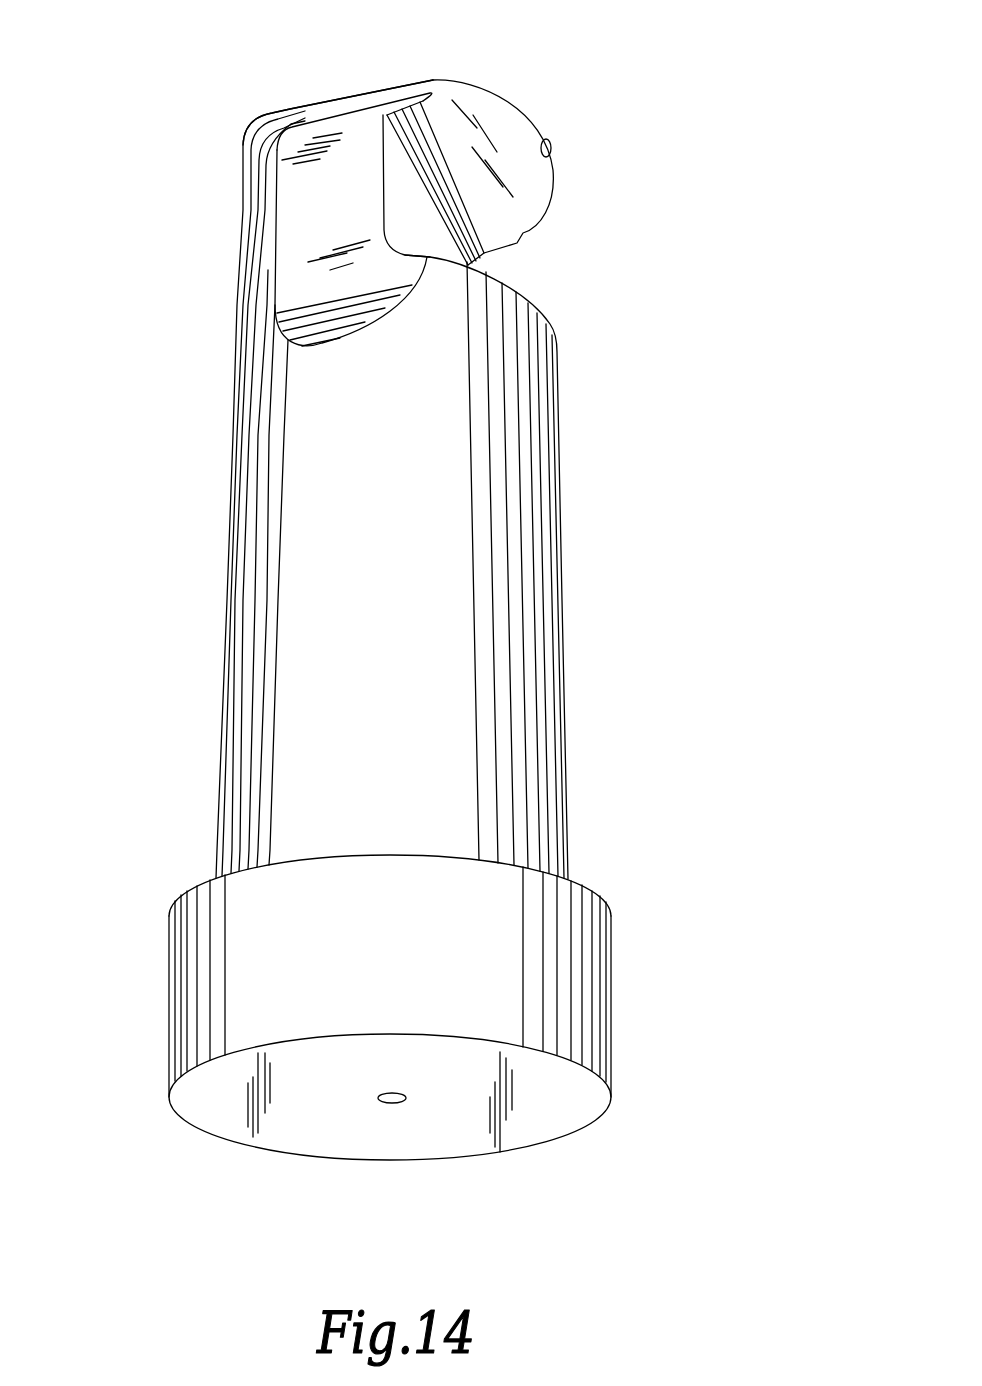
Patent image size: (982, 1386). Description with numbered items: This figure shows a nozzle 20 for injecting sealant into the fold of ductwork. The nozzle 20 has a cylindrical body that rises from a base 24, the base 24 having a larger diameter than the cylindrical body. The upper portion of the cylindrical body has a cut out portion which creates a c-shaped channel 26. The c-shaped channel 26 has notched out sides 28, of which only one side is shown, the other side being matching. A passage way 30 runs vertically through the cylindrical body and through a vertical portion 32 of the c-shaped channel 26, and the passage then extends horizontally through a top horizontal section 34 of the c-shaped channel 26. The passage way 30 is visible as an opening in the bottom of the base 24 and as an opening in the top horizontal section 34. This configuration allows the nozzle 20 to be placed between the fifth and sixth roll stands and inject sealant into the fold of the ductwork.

The nozzle 20 is at (737, 388).
The base 24 is at (265, 963).
The c-shaped channel 26 is at (545, 247).
The notched out sides 28 is at (318, 228).
The passage way 30 is at (555, 146).
The vertical portion 32 is at (345, 107).
The top horizontal section 34 is at (505, 145).